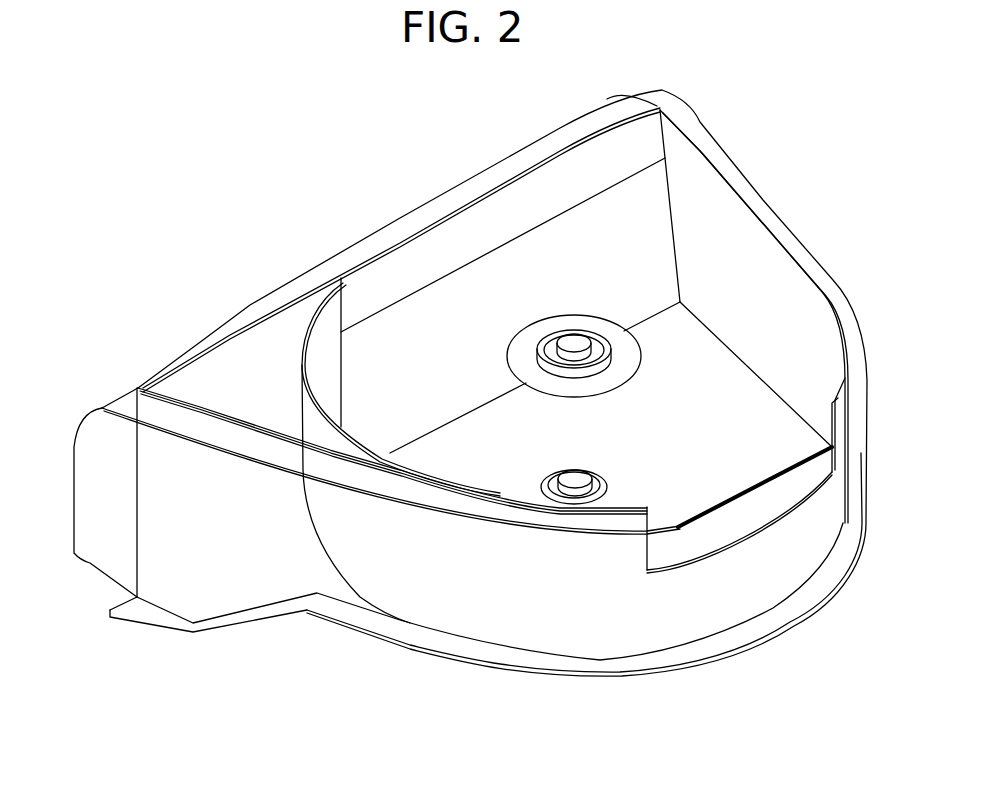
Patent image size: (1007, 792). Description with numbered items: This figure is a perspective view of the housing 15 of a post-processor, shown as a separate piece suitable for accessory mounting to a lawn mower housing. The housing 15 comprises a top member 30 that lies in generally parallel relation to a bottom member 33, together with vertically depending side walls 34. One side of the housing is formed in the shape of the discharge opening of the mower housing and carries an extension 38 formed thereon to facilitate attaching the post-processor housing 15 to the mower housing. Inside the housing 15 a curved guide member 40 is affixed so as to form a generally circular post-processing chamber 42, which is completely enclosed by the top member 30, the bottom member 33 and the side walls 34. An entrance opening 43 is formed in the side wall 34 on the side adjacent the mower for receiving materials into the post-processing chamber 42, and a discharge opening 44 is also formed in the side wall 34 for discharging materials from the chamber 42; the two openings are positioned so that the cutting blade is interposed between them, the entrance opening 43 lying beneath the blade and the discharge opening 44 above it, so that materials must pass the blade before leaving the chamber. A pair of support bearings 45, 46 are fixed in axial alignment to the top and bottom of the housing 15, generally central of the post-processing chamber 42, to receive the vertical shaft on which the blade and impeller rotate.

The housing 15 is at (252, 247).
The top member 30 is at (262, 460).
The bottom member 33 is at (287, 618).
The side walls 34 is at (770, 308).
The extension 38 is at (462, 205).
The curved guide member 40 is at (312, 378).
The post-processing chamber 42 is at (768, 423).
The entrance opening 43 is at (604, 269).
The discharge opening 44 is at (785, 495).
The support bearing 45 is at (597, 480).
The support bearing 46 is at (594, 347).